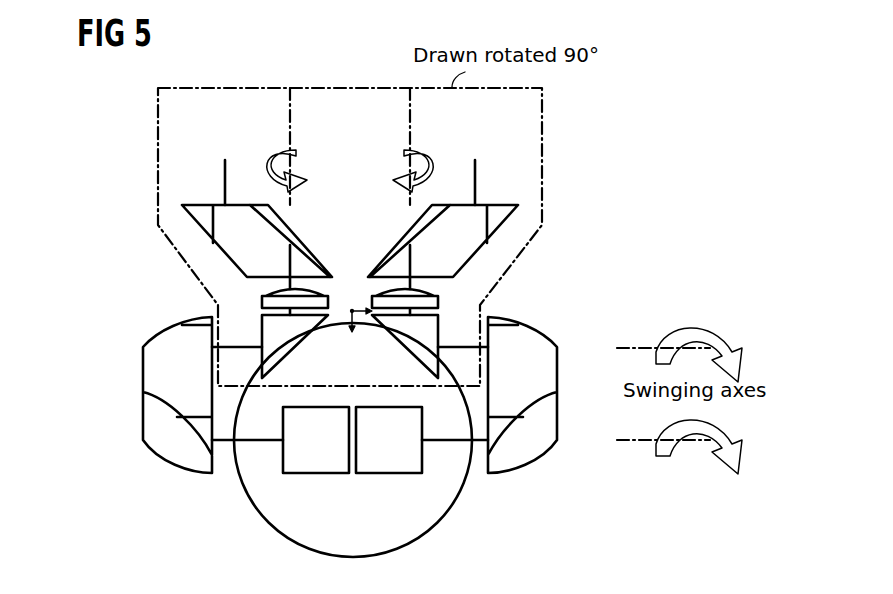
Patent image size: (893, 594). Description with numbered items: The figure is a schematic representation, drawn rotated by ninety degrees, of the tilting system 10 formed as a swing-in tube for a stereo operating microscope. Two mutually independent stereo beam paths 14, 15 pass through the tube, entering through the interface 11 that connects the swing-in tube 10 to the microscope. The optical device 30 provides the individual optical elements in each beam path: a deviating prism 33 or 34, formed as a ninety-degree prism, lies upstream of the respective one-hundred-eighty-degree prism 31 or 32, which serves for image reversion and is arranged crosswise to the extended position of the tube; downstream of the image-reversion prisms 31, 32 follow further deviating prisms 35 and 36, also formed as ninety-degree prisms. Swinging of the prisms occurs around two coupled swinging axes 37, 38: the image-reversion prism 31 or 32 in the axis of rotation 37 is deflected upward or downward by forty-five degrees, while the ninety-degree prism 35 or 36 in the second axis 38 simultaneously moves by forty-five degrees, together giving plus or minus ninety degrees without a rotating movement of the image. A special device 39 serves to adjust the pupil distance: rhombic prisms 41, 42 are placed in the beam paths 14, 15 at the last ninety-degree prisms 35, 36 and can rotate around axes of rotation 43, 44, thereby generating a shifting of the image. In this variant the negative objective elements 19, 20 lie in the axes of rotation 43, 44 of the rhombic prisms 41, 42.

The tilting system 10 is at (128, 178).
The interface 11 is at (438, 526).
The beam path 14 is at (224, 172).
The beam path 15 is at (476, 172).
The negative objective element 19 is at (262, 300).
The negative objective element 20 is at (438, 300).
The optical device 30 is at (168, 305).
The 180° prism 31 is at (150, 372).
The 180° prism 32 is at (549, 372).
The deviating prism 33 is at (314, 474).
The deviating prism 34 is at (400, 474).
The deviating prism 35 is at (292, 350).
The deviating prism 36 is at (408, 350).
The axis of rotation 37 is at (640, 442).
The axis of rotation 38 is at (640, 348).
The device 39 is at (176, 257).
The rhombic prism 41 is at (233, 210).
The rhombic prism 42 is at (462, 210).
The axis of rotation 43 is at (301, 157).
The axis of rotation 44 is at (399, 157).